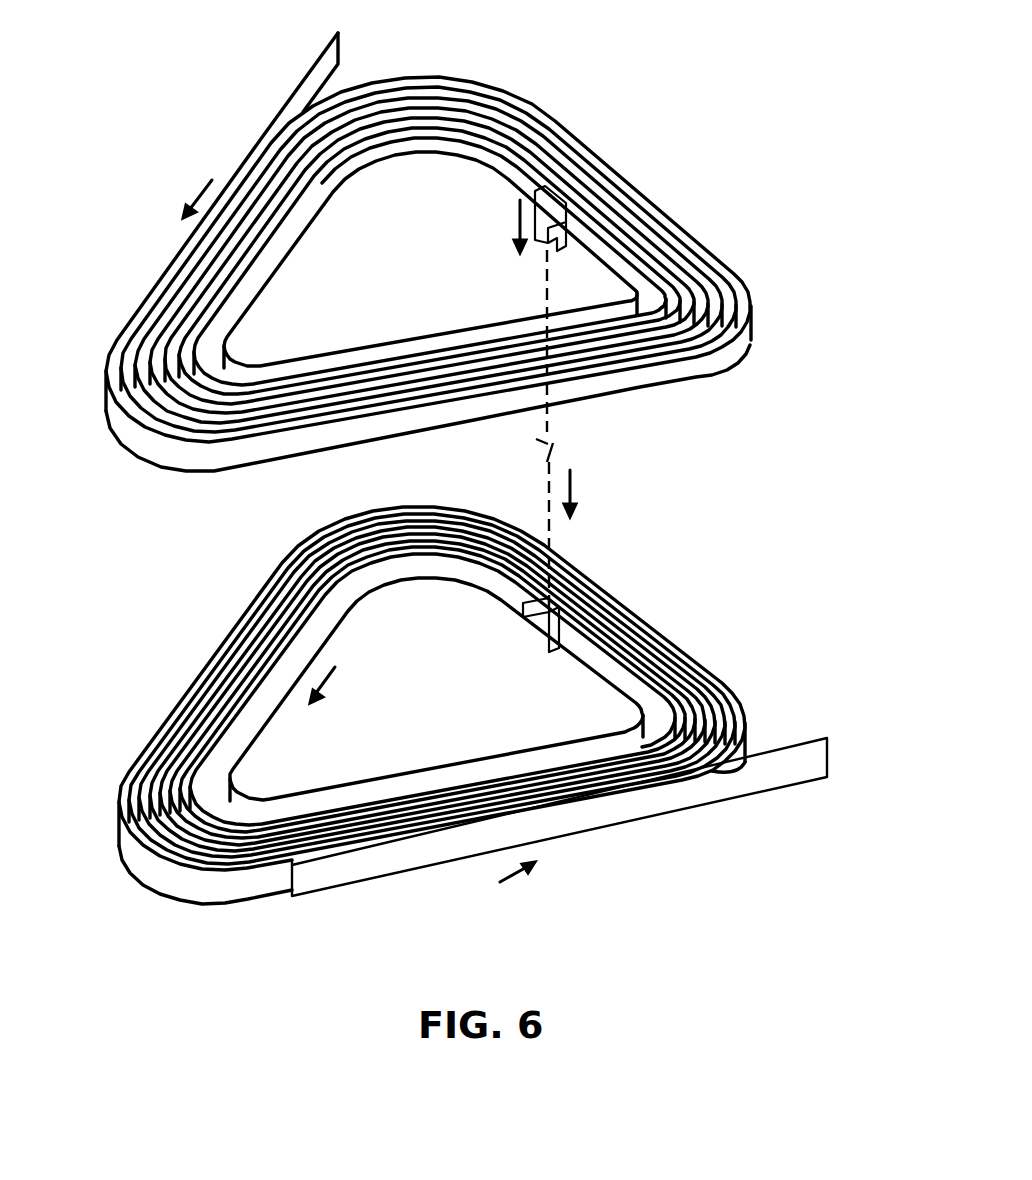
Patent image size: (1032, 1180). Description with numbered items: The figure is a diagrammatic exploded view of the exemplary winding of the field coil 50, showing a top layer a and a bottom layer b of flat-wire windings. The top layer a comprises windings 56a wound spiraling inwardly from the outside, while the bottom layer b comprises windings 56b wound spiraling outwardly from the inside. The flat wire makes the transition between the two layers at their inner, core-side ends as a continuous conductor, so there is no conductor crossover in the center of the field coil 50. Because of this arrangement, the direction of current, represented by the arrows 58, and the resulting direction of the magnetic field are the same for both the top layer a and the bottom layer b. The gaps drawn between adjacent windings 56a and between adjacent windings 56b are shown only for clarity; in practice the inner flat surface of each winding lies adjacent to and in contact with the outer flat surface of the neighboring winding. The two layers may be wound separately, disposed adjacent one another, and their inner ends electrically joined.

The field coil 50 is at (479, 485).
The windings of top layer 56a is at (318, 54).
The windings of bottom layer 56b is at (255, 745).
The arrows 58 is at (198, 196).
The top layer a is at (86, 392).
The bottom layer b is at (96, 833).